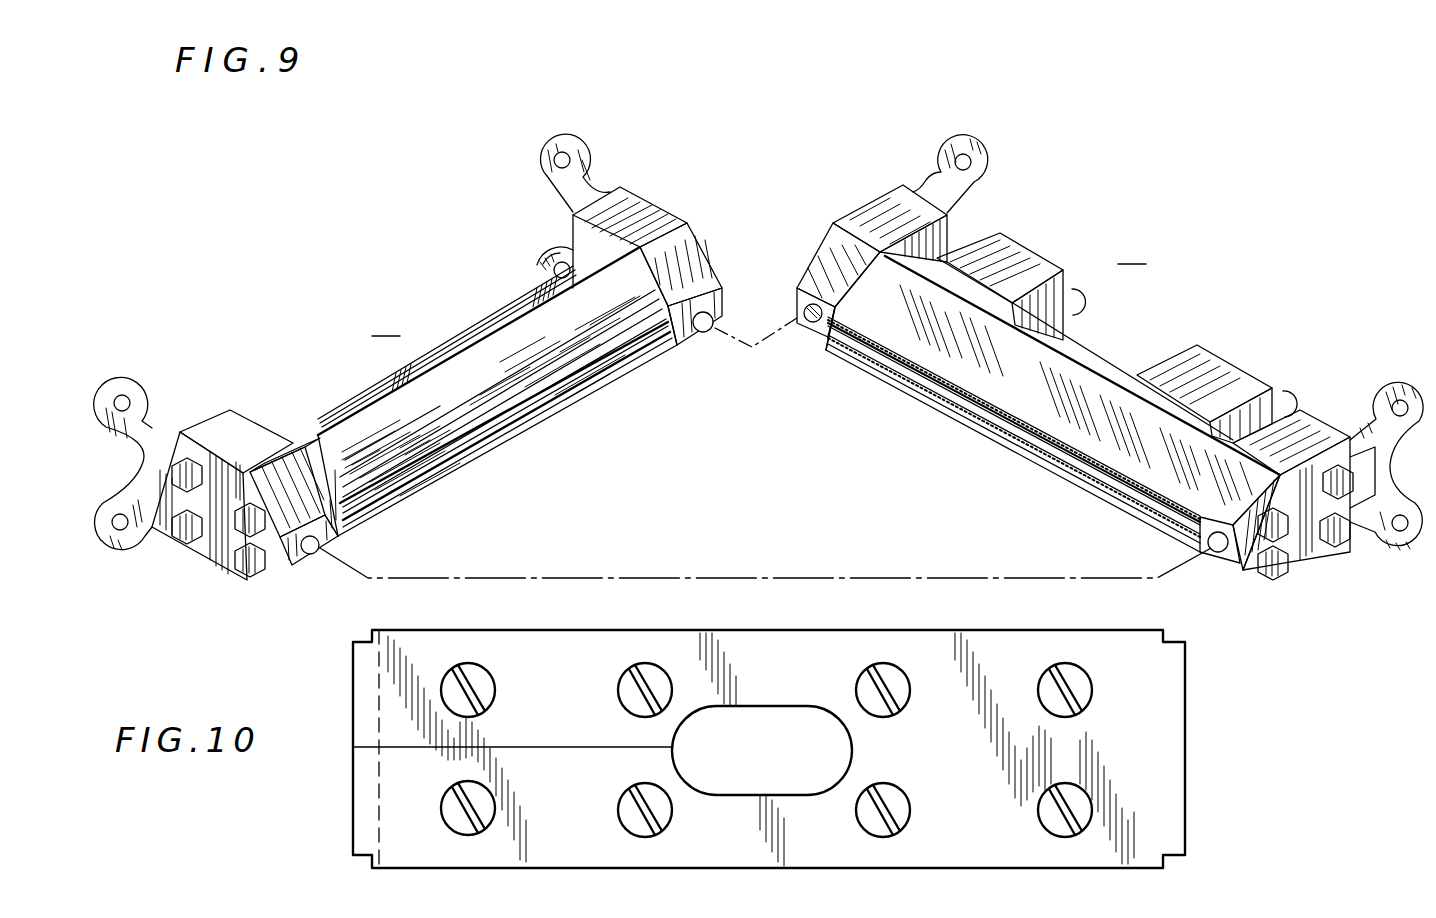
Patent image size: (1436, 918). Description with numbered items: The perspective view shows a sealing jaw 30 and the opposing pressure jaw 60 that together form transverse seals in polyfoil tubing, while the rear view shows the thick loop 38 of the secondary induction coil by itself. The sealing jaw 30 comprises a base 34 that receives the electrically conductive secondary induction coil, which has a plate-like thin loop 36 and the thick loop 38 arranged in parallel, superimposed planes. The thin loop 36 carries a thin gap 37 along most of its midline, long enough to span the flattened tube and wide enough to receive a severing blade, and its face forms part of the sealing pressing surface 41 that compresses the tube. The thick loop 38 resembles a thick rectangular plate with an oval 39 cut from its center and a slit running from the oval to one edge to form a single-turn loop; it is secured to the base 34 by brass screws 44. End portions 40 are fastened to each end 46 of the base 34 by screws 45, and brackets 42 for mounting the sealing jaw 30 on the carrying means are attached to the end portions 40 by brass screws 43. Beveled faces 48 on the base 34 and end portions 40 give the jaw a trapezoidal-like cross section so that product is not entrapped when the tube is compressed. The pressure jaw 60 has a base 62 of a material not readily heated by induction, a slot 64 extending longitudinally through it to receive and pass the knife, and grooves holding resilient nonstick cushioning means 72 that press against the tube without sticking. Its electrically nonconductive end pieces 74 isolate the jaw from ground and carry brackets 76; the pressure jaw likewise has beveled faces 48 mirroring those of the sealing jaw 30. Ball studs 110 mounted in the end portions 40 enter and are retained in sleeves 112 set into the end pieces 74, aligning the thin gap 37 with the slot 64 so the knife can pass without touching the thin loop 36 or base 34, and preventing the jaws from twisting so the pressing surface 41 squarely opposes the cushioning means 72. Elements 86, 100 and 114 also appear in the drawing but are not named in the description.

In FIG. 9, the sealing jaw 30 is at (497, 391).
In FIG. 9, the base 34 is at (318, 440).
In FIG. 9, the thin loop 36 is at (407, 487).
In FIG. 9, the thin gap 37 is at (603, 376).
In FIG. 9, the thick loop 38 is at (345, 406).
In FIG. 10, the thick loop 38 is at (587, 630).
In FIG. 10, the oval 39 is at (778, 764).
In FIG. 9, the end portions 40 is at (640, 213).
In FIG. 9, the sealing pressing surface 41 is at (522, 444).
In FIG. 9, the brackets 42 is at (591, 165).
In FIG. 9, the brass screws 43 is at (190, 548).
In FIG. 10, the brass screws 44 is at (627, 698).
In FIG. 9, the screws 45 is at (250, 570).
In FIG. 9, the end 46 is at (228, 425).
In FIG. 9, the beveled faces 48 is at (473, 410).
In FIG. 9, the pressure jaw 60 is at (1053, 395).
In FIG. 9, the base 62 is at (1032, 396).
In FIG. 9, the slot 64 is at (928, 384).
In FIG. 9, the cushioning means 72 is at (1100, 480).
In FIG. 9, the end pieces 74 is at (875, 210).
In FIG. 9, the brackets 76 is at (947, 148).
In FIG. 9, the latch block 86 is at (1047, 252).
In FIG. 9, the guide pin 100 is at (1082, 300).
In FIG. 9, the ball studs 110 is at (703, 333).
In FIG. 9, the sleeves 112 is at (1218, 553).
In FIG. 9, the mounting hole 114 is at (568, 139).